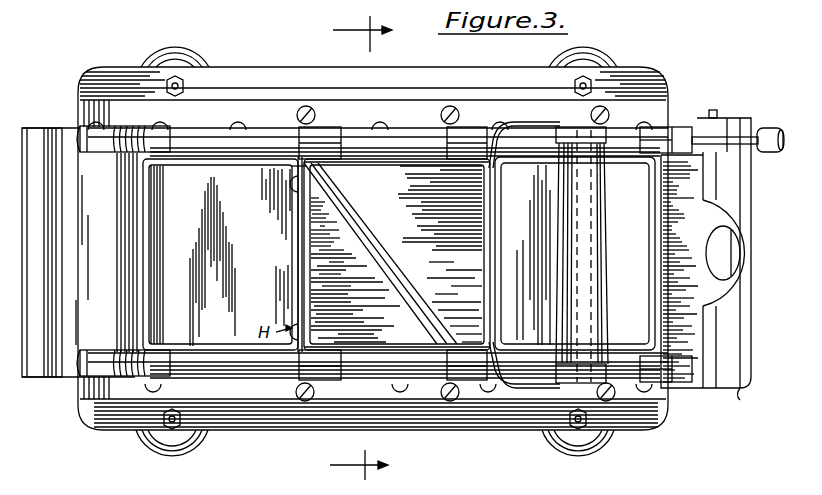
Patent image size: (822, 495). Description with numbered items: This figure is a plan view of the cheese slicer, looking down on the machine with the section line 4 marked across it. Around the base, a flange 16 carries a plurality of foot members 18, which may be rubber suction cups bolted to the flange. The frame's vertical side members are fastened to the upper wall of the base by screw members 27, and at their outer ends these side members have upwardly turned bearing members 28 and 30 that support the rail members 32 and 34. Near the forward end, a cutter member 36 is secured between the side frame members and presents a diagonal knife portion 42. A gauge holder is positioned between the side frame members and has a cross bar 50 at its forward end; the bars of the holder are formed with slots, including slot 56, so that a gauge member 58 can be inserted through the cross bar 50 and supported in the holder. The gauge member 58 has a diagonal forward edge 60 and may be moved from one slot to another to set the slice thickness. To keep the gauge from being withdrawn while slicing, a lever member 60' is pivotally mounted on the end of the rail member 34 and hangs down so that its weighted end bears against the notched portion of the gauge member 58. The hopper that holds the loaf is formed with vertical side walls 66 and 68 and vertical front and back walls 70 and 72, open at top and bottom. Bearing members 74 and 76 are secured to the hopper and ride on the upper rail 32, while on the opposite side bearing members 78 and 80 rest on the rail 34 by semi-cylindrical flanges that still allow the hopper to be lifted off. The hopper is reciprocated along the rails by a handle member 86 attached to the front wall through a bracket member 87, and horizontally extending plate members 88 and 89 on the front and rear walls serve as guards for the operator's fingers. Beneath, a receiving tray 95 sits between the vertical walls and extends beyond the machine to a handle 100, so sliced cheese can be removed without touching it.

The section line 4- 4 is at (352, 248).
The flange 16 is at (243, 72).
The foot members 18 is at (162, 60).
The screw members 27 is at (305, 106).
The bearing member 28 is at (662, 140).
The bearing member 30 is at (98, 372).
The rail member 32 is at (256, 135).
The rail member 34 is at (245, 365).
The cutter member 36 is at (312, 256).
The diagonal knife portion 42 is at (330, 212).
The cross bar 50 is at (742, 318).
The slot 56 is at (742, 376).
The gauge member 58 is at (397, 254).
The diagonal forward edge 60 is at (379, 253).
The lever member 60' is at (738, 121).
The vertical side wall 66 is at (404, 346).
The vertical side wall 68 is at (396, 164).
The vertical front wall 70 is at (298, 190).
The vertical back wall 72 is at (486, 312).
The bearing member 74 is at (322, 372).
The bearing member 76 is at (478, 378).
The bearing member 78 is at (325, 136).
The bearing member 80 is at (462, 140).
The handle member 86 is at (598, 324).
The bracket member 87 is at (518, 130).
The plate member 88 is at (220, 254).
The plate member 89 is at (575, 253).
The receiving tray 95 is at (95, 260).
The handle 100 is at (30, 140).